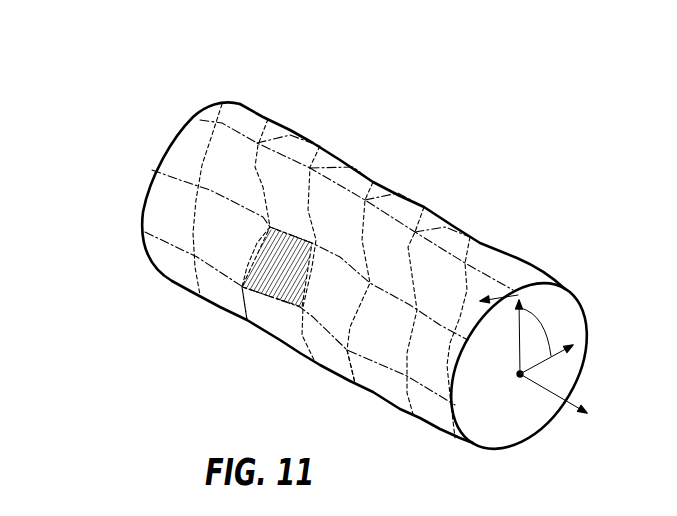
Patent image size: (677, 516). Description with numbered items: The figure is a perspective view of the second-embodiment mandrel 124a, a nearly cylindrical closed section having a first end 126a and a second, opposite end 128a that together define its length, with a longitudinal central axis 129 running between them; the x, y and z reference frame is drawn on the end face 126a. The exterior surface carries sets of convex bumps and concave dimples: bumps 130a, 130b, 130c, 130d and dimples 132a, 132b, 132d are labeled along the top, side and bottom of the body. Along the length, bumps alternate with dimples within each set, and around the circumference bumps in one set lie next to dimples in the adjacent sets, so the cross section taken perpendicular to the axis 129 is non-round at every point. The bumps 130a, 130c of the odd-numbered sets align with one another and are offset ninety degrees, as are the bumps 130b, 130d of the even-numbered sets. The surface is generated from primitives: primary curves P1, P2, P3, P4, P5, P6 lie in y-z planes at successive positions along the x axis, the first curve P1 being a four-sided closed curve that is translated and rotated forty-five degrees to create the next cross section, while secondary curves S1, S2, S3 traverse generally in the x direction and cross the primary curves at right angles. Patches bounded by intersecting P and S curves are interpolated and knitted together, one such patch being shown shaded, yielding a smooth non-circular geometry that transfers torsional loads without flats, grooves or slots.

The mandrel 124a is at (481, 146).
The first end 126a is at (520, 424).
The second end 128a is at (142, 199).
The longitudinal central axis 129 is at (573, 391).
The bumps of first set 130a is at (207, 113).
The bumps of second set 130b is at (212, 190).
The bumps of third set 130c is at (140, 226).
The bumps of fourth set 130d is at (207, 298).
The dimples of first set 132a is at (270, 118).
The dimples of second set 132b is at (151, 167).
The dimples of fourth set 132d is at (247, 336).
The secondary curve S1 is at (223, 118).
The secondary curve S2 is at (178, 173).
The secondary curve S3 is at (153, 228).
The primary curve P1 is at (203, 126).
The primary curve P2 is at (228, 169).
The primary curve P3 is at (287, 198).
The primary curve P4 is at (334, 227).
The primary curve P5 is at (385, 260).
The primary curve P6 is at (434, 285).